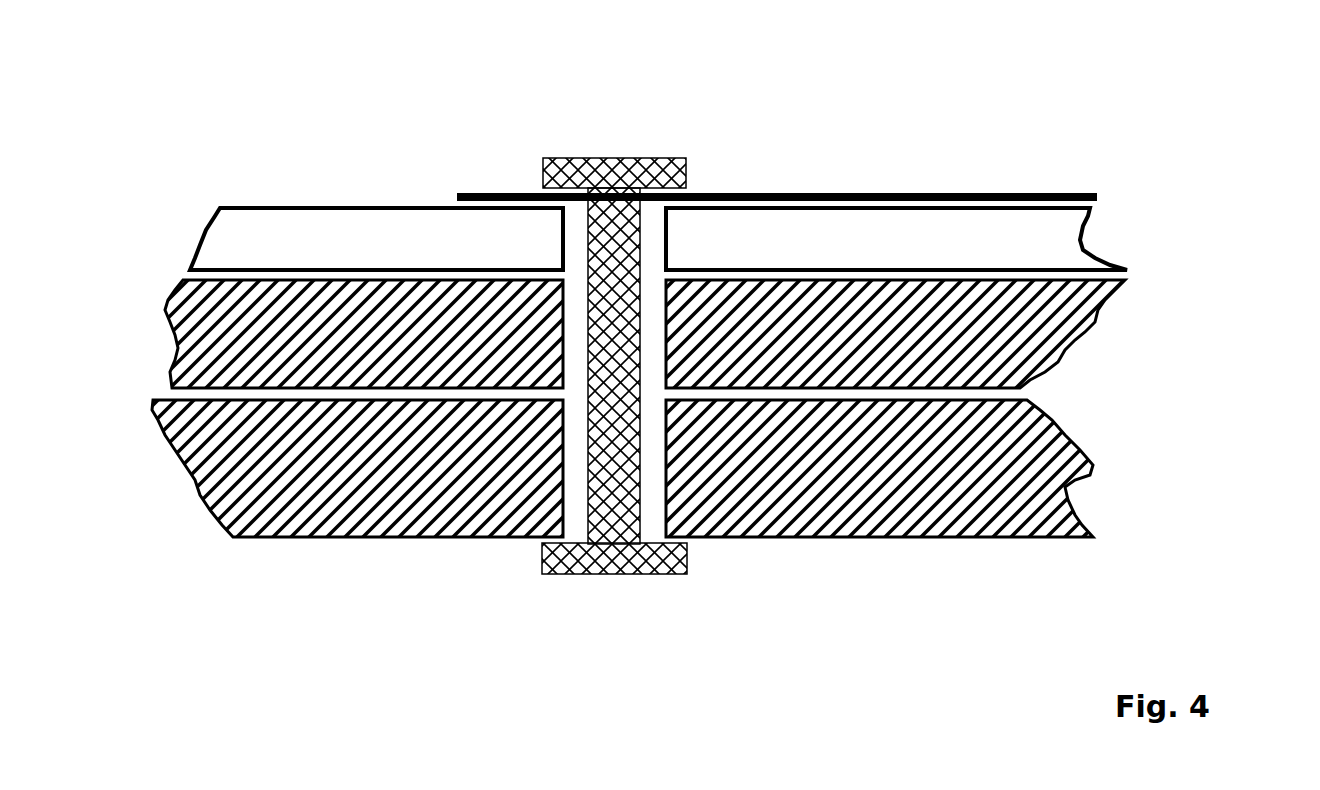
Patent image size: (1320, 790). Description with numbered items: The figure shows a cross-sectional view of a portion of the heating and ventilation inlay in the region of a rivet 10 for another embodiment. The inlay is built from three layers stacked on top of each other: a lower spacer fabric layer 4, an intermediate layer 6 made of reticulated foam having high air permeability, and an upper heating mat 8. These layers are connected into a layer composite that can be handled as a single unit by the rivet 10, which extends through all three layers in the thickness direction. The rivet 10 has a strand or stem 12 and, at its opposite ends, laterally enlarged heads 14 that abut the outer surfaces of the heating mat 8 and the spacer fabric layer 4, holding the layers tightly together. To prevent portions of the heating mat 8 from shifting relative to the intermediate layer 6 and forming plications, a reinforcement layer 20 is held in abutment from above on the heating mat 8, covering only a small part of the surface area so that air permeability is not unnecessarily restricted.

The spacer fabric layer 4 is at (1090, 477).
The intermediate layer 6 is at (1075, 333).
The heating mat 8 is at (1083, 250).
The rivet 10 is at (617, 327).
The stem 12 is at (590, 497).
The enlarged heads 14 is at (543, 173).
The reinforcement layer 20 is at (866, 193).